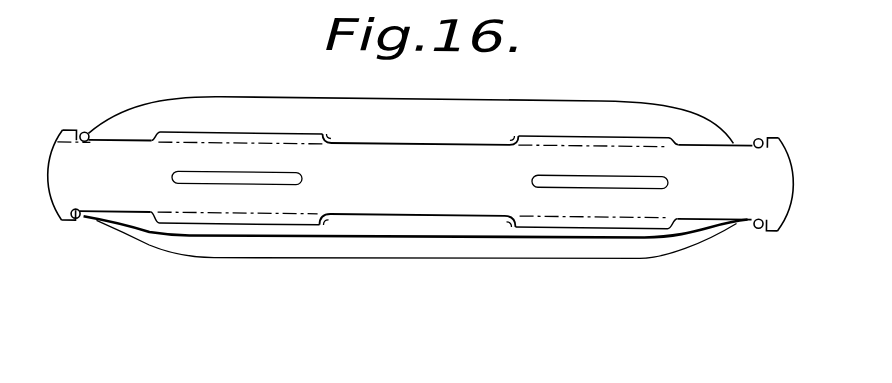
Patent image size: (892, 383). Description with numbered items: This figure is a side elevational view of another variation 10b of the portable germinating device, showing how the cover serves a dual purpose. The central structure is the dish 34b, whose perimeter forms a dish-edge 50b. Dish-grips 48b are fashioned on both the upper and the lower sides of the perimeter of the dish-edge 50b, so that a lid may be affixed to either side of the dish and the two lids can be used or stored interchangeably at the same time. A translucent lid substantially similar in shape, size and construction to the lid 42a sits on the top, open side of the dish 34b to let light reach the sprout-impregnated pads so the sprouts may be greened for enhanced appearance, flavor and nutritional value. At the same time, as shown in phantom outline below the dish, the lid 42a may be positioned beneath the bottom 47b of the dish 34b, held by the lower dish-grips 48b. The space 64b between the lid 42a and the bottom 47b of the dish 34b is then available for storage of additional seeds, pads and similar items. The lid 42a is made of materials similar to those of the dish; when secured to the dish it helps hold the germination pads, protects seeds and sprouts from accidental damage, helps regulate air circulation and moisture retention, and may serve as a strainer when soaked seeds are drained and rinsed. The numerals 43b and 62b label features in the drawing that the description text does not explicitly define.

The variation of the portable germinating device 10b is at (670, 46).
The dish 34b is at (392, 229).
The lid 42a is at (645, 252).
The upper cover 43b is at (553, 82).
The bottom of the dish 47b is at (470, 233).
The dish-grips 48b is at (662, 216).
The dish-edge 50b is at (41, 195).
The upper end hook 62b is at (80, 208).
The space 64b is at (278, 245).